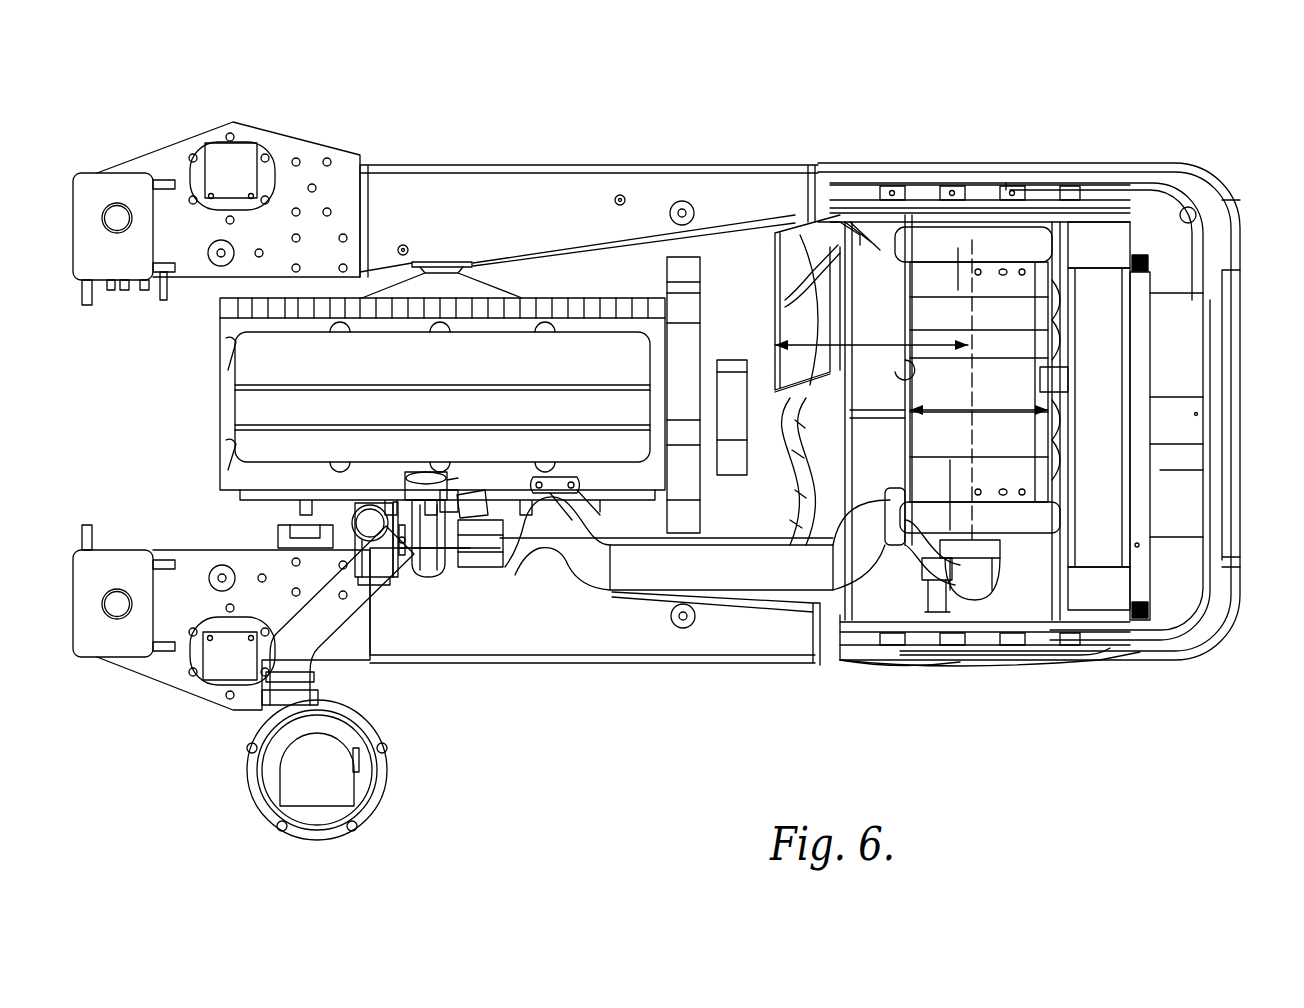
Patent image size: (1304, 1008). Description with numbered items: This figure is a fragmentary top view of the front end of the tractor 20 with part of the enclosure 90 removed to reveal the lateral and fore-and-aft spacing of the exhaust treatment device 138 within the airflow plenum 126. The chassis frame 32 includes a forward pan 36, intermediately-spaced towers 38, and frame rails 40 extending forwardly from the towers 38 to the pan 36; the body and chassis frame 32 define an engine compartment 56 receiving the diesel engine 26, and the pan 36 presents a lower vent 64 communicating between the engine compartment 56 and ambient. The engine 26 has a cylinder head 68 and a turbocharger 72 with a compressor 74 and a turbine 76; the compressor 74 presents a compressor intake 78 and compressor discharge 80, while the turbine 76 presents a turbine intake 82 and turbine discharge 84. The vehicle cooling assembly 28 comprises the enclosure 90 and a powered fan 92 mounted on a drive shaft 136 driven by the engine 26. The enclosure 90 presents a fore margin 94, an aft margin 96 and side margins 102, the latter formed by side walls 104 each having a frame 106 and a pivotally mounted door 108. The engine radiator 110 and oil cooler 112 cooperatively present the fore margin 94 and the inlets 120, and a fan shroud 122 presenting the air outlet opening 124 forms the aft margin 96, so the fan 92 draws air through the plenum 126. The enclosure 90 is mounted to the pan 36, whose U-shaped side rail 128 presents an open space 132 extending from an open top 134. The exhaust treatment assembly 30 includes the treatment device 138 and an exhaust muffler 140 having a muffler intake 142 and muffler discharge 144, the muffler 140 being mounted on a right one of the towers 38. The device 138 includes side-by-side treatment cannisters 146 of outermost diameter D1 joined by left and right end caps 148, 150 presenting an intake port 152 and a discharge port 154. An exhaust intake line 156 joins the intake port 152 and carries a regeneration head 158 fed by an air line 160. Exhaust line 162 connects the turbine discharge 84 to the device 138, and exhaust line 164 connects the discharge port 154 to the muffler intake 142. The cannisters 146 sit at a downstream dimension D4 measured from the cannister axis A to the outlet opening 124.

The tractor 20 is at (1185, 108).
The diesel engine 26 is at (240, 435).
The vehicle cooling assembly 28 is at (1100, 243).
The exhaust treatment assembly 30 is at (1022, 382).
The chassis frame 32 is at (605, 655).
The forward pan 36 is at (1045, 660).
The towers 38 is at (298, 147).
The frame rails 40 is at (503, 180).
The engine compartment 56 is at (770, 149).
The lower vent 64 is at (1162, 432).
The cylinder head 68 is at (240, 330).
The turbocharger 72 is at (405, 550).
The compressor 74 is at (375, 560).
The turbine 76 is at (437, 555).
The compressor intake 78 is at (358, 553).
The compressor discharge 80 is at (375, 505).
The turbine intake 82 is at (450, 500).
The turbine discharge 84 is at (455, 540).
The enclosure 90 is at (1117, 597).
The powered fan 92 is at (800, 460).
The fore margin 94 is at (1187, 353).
The aft margin 96 is at (705, 190).
The side margins 102 is at (985, 148).
The side walls 104 is at (845, 210).
The frame 106 is at (1085, 192).
The door 108 is at (912, 208).
The engine radiator 110 is at (1110, 310).
The oil cooler 112 is at (1143, 290).
The inlets 120 is at (1195, 465).
The fan shroud 122 is at (805, 320).
The air outlet opening 124 is at (773, 385).
The airflow plenum 126 is at (870, 256).
The side rail 128 is at (1210, 612).
The open space 132 is at (1128, 197).
The open top 134 is at (1190, 222).
The drive shaft 136 is at (760, 422).
The exhaust treatment device 138 is at (1000, 443).
The exhaust muffler 140 is at (370, 768).
The muffler intake 142 is at (262, 726).
The muffler discharge 144 is at (326, 818).
The treatment cannisters 146 is at (918, 388).
The left end cap 148 is at (958, 248).
The right end cap 150 is at (950, 513).
The treatment intake port 152 is at (902, 280).
The discharge port 154 is at (1000, 545).
The exhaust intake line 156 is at (905, 383).
The regeneration head 158 is at (920, 566).
The air line 160 is at (920, 612).
The exhaust line 162 is at (695, 580).
The exhaust line 164 is at (320, 632).
The cannister axis A is at (975, 252).
The outermost diameter D1 is at (979, 398).
The downstream dimension D4 is at (871, 333).